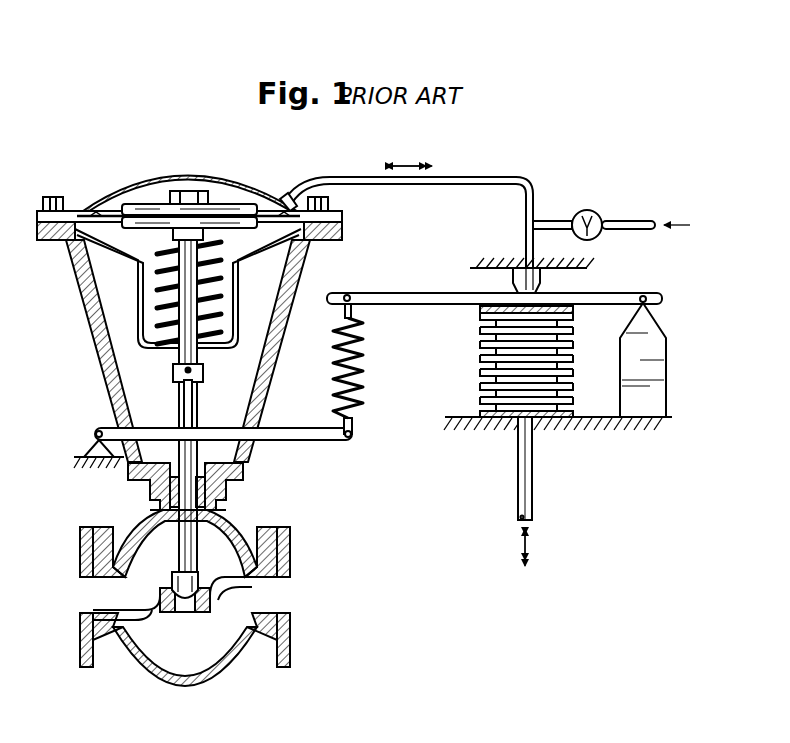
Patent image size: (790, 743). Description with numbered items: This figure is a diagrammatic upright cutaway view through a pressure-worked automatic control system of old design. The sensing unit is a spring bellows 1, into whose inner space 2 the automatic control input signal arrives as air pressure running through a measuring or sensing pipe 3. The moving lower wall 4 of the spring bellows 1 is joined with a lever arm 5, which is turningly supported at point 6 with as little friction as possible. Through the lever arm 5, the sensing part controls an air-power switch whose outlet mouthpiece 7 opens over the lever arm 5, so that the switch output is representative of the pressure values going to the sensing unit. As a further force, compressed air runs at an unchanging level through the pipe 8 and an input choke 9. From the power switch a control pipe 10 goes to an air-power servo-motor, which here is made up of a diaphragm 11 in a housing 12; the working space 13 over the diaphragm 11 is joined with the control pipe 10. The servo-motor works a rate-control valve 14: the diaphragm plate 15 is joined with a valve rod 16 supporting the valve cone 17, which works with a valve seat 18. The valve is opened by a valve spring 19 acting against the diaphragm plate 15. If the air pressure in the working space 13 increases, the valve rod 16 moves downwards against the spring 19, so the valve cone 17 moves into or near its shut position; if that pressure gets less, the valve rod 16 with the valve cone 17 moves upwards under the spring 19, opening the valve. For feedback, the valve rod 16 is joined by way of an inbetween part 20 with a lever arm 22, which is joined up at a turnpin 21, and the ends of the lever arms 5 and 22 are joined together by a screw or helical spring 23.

The spring bellows 1 is at (480, 374).
The inner space 2 is at (540, 353).
The measuring or sensing pipe 3 is at (528, 498).
The moving lower wall 4 is at (497, 319).
The lever arm 5 is at (418, 293).
The point 6 is at (641, 302).
The outlet mouthpiece 7 is at (541, 283).
The pipe 8 is at (640, 221).
The input choke 9 is at (592, 211).
The control pipe 10 is at (488, 177).
The diaphragm 11 is at (104, 197).
The housing 12 is at (148, 176).
The working space 13 is at (203, 186).
The rate-control valve 14 is at (230, 683).
The diaphragm plate 15 is at (234, 205).
The valve rod 16 is at (142, 520).
The valve cone 17 is at (197, 572).
The valve seat 18 is at (188, 592).
The valve spring 19 is at (158, 293).
The inbetween part 20 is at (184, 400).
The turnpin 21 is at (96, 434).
The lever arm 22 is at (322, 440).
The screw or helical spring 23 is at (363, 379).